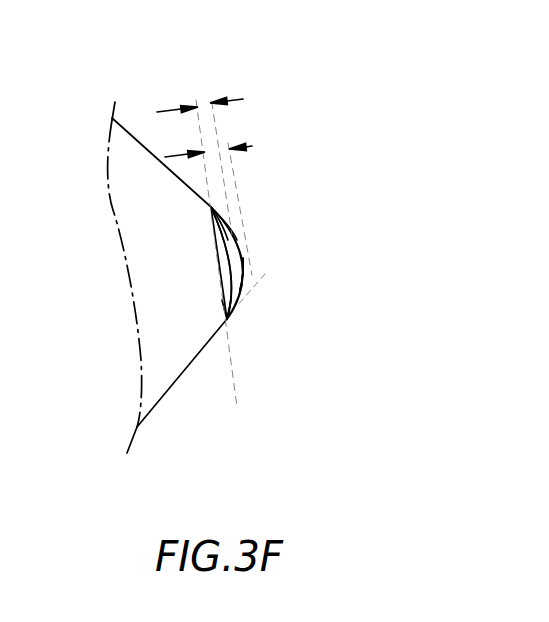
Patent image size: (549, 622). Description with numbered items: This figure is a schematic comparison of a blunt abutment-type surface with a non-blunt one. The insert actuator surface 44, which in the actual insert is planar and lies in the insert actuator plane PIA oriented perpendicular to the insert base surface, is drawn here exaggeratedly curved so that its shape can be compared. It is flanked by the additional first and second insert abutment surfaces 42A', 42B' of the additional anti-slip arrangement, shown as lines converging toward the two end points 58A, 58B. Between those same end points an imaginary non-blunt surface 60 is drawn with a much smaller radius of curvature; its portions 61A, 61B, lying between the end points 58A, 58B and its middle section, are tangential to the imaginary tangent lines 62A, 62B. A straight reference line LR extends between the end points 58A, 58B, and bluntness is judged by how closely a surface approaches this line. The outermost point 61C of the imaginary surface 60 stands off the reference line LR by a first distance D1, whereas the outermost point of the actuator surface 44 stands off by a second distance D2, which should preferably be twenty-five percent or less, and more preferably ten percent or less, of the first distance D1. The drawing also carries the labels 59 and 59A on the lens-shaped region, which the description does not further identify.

The insert actuator surface 44 is at (222, 283).
The additional second insert abutment surface 42B' is at (161, 108).
The additional first insert abutment surface 42A' is at (185, 398).
The lens-shaped cutting insert 59 is at (224, 300).
The cutting insert mid-surface 59A is at (231, 265).
The end point 58B is at (222, 193).
The portion of imaginary surface 61B is at (228, 222).
The imaginary tangent line 62B is at (242, 251).
The imaginary non-blunt surface 60 is at (241, 269).
The outermost point of imaginary surface 61C is at (241, 274).
The imaginary tangent line 62A is at (237, 303).
The portion of imaginary surface 61A is at (236, 318).
The end point 58A is at (244, 330).
The straight reference line LR is at (237, 385).
The insert actuator plane PIA is at (250, 290).
The second distance D2 is at (243, 99).
The first distance D1 is at (252, 146).